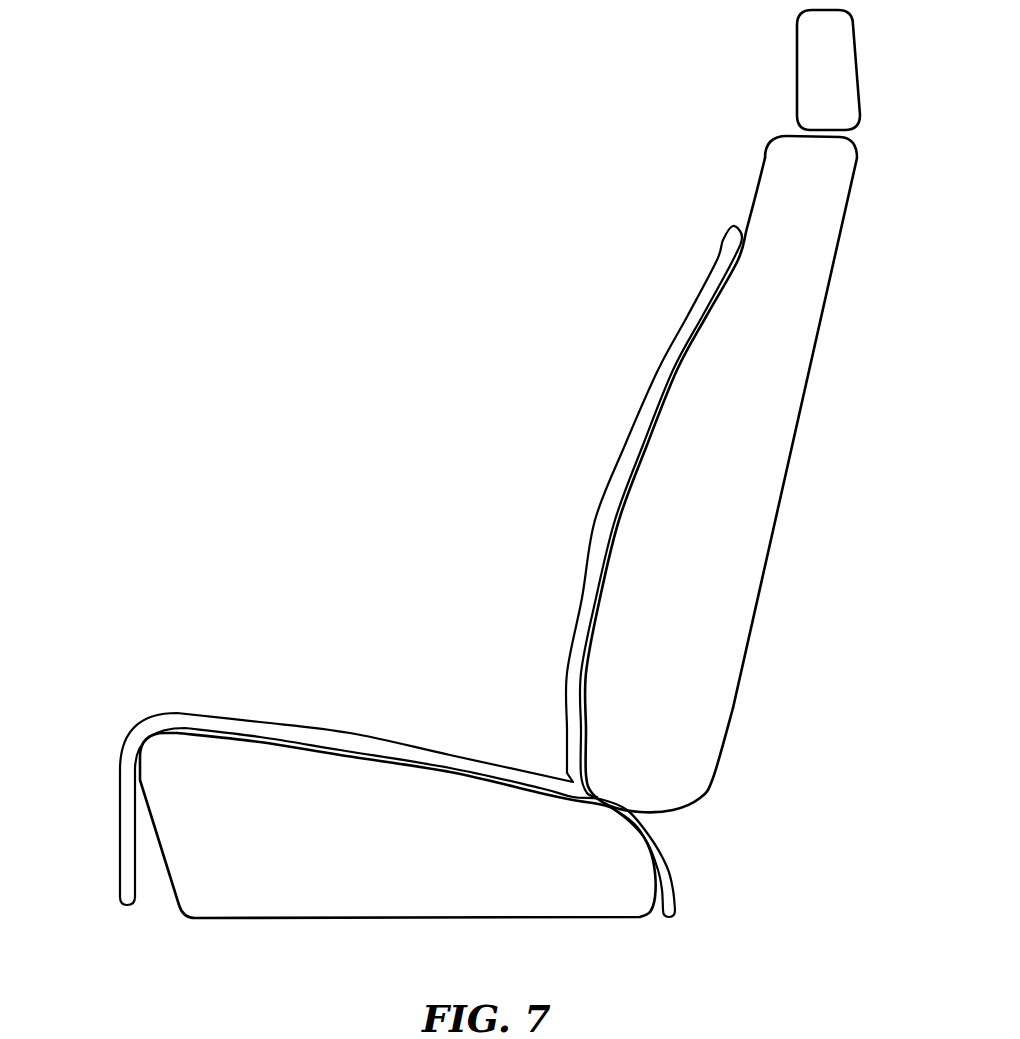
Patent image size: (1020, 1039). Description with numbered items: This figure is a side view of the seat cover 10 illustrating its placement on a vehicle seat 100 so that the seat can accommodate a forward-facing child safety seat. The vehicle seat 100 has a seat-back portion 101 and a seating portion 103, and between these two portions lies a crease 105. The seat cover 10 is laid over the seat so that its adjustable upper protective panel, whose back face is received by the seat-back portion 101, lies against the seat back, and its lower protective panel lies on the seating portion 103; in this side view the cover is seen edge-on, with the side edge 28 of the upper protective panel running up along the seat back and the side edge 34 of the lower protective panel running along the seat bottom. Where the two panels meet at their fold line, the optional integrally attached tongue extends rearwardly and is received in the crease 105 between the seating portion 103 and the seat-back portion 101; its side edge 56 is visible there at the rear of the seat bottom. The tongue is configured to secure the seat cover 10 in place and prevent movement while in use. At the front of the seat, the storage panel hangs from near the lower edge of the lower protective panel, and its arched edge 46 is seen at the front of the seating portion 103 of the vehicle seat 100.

The seat cover 10 is at (655, 368).
The side edge of adjustable upper protective panel 28 is at (607, 490).
The side edge of lower protective panel 34 is at (415, 750).
The arched edge of storage panel 46 is at (127, 883).
The side edge of tongue 56 is at (675, 875).
The vehicle seat 100 is at (782, 168).
The seat-back portion 101 is at (715, 582).
The seating portion 103 is at (252, 895).
The crease 105 is at (650, 817).